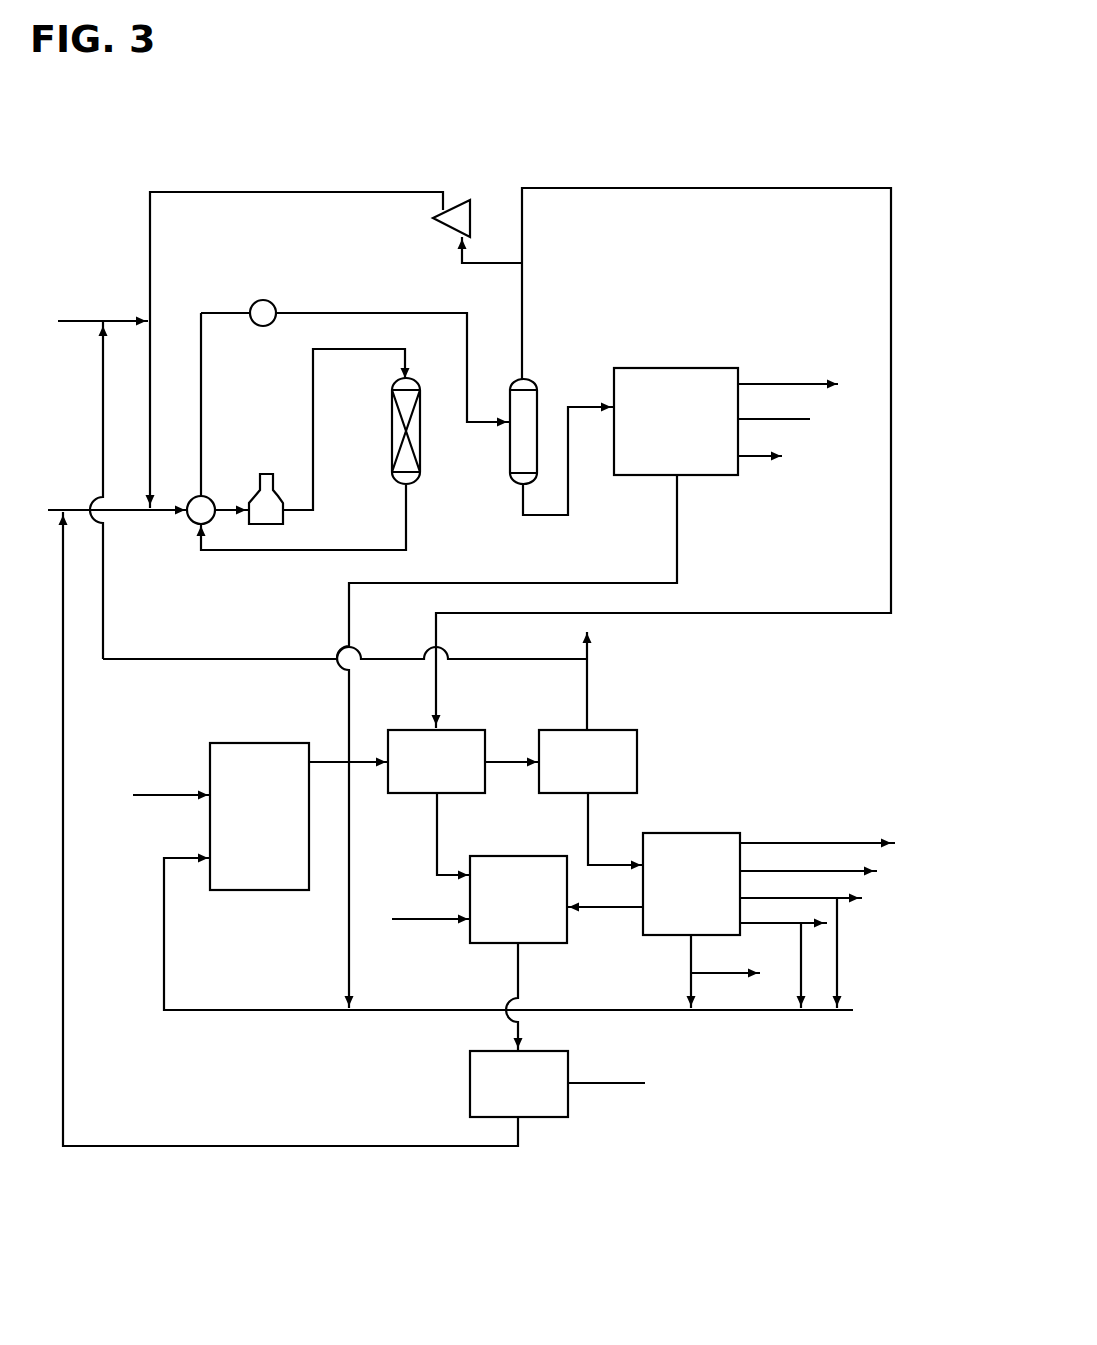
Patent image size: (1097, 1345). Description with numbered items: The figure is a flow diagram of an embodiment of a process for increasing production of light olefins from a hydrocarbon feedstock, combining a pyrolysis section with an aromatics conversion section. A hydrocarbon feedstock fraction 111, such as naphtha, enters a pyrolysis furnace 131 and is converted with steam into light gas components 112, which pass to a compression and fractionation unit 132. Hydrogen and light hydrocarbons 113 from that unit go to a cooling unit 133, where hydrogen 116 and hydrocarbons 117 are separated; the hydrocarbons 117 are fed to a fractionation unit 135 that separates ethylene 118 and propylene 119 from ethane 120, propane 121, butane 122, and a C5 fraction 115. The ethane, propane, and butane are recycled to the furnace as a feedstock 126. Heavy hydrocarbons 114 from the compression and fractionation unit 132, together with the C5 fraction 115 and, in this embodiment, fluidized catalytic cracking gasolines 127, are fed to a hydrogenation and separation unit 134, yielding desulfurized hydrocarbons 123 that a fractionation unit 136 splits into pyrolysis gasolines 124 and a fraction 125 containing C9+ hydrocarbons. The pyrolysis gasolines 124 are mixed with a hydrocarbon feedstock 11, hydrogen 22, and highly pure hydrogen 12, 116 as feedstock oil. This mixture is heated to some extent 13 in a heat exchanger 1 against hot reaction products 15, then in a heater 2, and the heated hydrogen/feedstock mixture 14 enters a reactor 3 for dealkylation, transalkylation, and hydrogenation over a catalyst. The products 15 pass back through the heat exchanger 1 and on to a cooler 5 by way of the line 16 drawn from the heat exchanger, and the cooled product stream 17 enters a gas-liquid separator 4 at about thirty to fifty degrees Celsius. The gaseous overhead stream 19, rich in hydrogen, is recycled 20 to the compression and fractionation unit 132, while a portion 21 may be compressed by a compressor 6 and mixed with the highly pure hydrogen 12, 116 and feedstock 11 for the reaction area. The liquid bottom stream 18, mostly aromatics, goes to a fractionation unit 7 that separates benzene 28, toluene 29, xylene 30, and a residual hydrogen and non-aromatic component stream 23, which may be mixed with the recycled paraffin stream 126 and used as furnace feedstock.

The heat exchanger 1 is at (192, 523).
The heater 2 is at (268, 474).
The reactor 3 is at (392, 432).
The gas-liquid separator 4 is at (510, 462).
The cooler 5 is at (268, 300).
The compressor 6 is at (453, 200).
The fractionation unit 7 is at (668, 368).
The hydrocarbon feedstock 11 is at (117, 499).
The highly pure hydrogen 12 is at (103, 475).
The partially heated hydrogen/feedstock mixture 13 is at (232, 498).
The hydrogen/feedstock mixture 14 is at (346, 429).
The reaction products 15 is at (302, 517).
The line 16 is at (215, 404).
The product stream 17 is at (355, 357).
The bottom stream 18 is at (568, 459).
The overhead stream 19 is at (536, 321).
The recycled overhead stream 20 is at (662, 446).
The portion of overhead stream 21 is at (490, 250).
The hydrogen 22 is at (295, 337).
The residual hydrogen and non-aromatic component stream 23 is at (507, 741).
The benzene 28 is at (805, 384).
The toluene 29 is at (791, 419).
The xylene 30 is at (777, 456).
The hydrocarbon feedstock fraction 111 is at (171, 783).
The light gas components 112 is at (348, 751).
The hydrogen and light hydrocarbons 113 is at (512, 751).
The heavy hydrocarbons (C5+) 114 is at (460, 836).
The C5 fraction 115 is at (605, 896).
The hydrogen 116 is at (368, 681).
The hydrocarbons 117 is at (615, 831).
The ethylene 118 is at (817, 833).
The propylene 119 is at (808, 861).
The ethane 120 is at (801, 941).
The propane 121 is at (783, 953).
The butane 122 is at (724, 971).
The hydrocarbons 123 is at (536, 996).
The pyrolysis gasolines 124 is at (289, 829).
The fraction containing C9+ hydrocarbons 125 is at (628, 1083).
The recycled feedstock 126 is at (508, 932).
The fluidized catalytic cracking gasolines 127 is at (431, 907).
The pyrolysis furnace 131 is at (210, 752).
The compression and fractionation unit 132 is at (400, 793).
The cooling unit 133 is at (637, 745).
The hydrogenation and separation unit 134 is at (470, 935).
The fractionation unit 135 is at (700, 833).
The fractionation unit 136 is at (470, 1080).